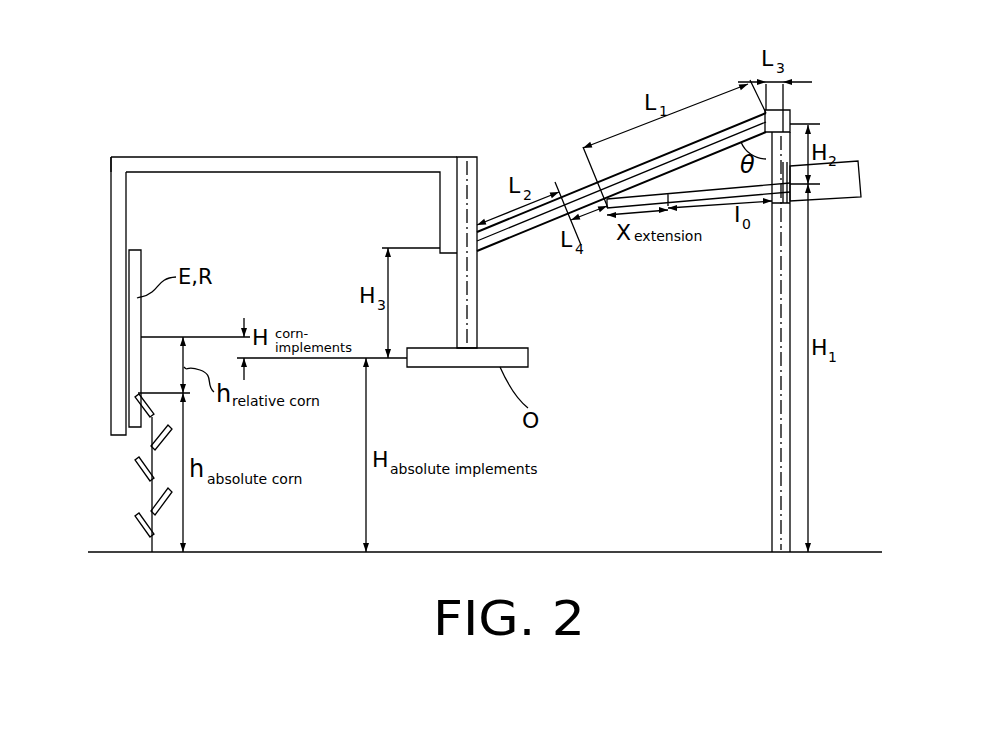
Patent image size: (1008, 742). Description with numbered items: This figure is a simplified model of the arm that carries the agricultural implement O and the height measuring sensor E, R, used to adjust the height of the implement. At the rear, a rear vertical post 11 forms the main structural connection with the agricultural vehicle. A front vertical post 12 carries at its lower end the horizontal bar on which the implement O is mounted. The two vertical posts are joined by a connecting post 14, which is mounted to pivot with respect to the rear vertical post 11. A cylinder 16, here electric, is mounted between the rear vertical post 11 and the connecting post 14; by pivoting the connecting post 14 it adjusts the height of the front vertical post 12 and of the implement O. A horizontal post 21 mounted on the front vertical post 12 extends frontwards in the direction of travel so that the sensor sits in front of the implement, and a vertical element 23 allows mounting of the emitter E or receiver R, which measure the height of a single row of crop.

The rear vertical post 11 is at (772, 385).
The front vertical post 12 is at (474, 318).
The connecting post 14 is at (521, 235).
The cylinder 16 is at (673, 193).
The horizontal post 21 is at (278, 163).
The vertical element 23 is at (112, 342).